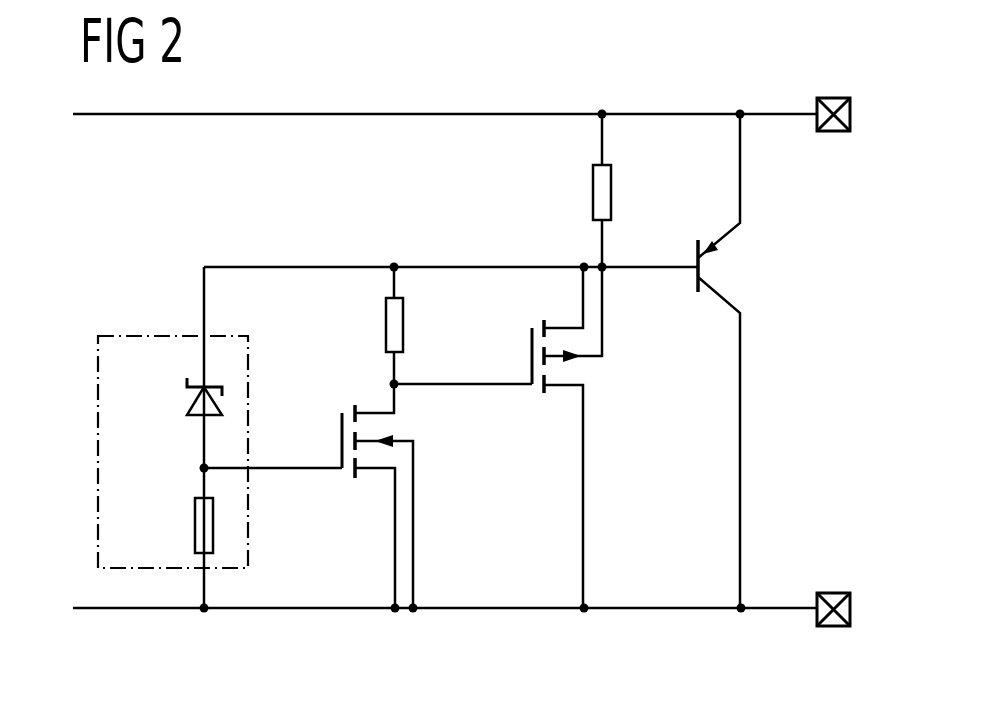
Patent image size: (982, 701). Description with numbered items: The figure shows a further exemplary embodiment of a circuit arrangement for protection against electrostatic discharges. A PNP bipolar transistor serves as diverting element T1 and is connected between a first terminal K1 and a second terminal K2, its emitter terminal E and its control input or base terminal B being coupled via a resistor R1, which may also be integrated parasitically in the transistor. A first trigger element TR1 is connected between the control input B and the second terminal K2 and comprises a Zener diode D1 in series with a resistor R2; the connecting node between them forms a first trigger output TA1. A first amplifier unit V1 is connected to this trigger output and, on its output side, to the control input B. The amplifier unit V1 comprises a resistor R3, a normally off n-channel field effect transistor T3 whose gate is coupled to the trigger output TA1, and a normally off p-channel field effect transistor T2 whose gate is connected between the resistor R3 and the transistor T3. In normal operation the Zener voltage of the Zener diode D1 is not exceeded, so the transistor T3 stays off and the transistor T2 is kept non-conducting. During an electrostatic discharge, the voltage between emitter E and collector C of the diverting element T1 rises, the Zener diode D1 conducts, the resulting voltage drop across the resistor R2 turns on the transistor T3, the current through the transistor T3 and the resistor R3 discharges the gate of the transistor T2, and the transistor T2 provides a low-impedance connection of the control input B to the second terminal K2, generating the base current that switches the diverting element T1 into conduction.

The first terminal K1 is at (833, 132).
The second terminal K2 is at (833, 593).
The resistor R1 is at (593, 192).
The resistor R2 is at (195, 525).
The resistor R3 is at (386, 325).
The diverting element T1 is at (700, 268).
The p-channel field effect transistor T2 is at (532, 357).
The n-channel field effect transistor T3 is at (342, 440).
The Zener diode D1 is at (192, 403).
The first trigger element TR1 is at (125, 335).
The first trigger output TA1 is at (250, 470).
The first amplifier unit V1 is at (613, 398).
The emitter terminal E is at (724, 207).
The control input B is at (683, 250).
The collector C is at (725, 332).